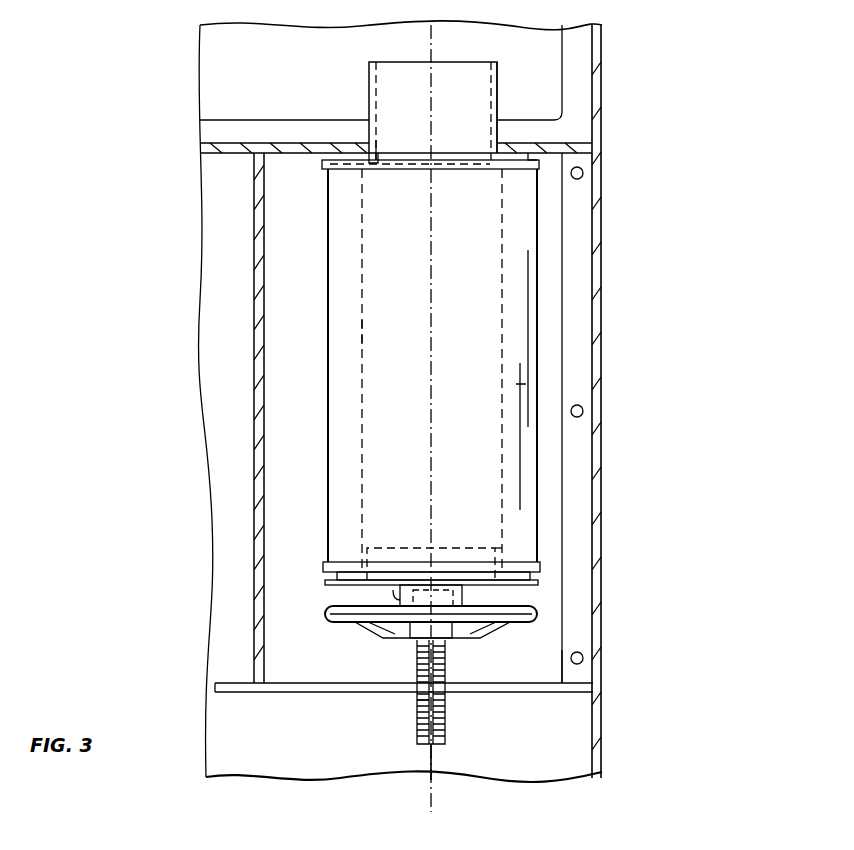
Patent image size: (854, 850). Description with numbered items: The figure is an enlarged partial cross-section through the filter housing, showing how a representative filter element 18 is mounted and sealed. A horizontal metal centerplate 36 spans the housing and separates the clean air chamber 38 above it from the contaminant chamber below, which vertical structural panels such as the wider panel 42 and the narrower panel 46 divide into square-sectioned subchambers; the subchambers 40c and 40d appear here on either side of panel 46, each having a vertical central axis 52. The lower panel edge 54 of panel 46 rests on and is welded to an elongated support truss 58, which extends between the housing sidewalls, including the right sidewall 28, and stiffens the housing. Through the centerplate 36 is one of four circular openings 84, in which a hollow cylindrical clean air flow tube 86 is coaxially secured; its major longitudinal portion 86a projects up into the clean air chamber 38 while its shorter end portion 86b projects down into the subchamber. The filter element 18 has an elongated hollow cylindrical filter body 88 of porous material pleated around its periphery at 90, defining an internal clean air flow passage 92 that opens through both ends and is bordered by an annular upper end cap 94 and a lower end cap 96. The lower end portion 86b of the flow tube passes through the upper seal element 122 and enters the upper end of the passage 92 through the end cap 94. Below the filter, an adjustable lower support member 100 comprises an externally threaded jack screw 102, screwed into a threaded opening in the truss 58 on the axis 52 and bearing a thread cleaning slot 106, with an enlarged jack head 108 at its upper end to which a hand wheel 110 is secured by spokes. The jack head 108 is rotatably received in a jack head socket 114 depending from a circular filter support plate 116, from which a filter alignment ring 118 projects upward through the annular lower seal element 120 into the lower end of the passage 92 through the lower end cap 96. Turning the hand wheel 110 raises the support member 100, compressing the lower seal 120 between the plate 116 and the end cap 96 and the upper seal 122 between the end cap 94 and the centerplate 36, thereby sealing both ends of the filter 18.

The filter element 18 is at (538, 445).
The right sidewall 28 is at (592, 292).
The centerplate 36 is at (246, 150).
The clean air chamber 38 is at (548, 54).
The contaminant subchamber 40c is at (229, 523).
The contaminant subchamber 40d is at (531, 653).
The structural panel 42 is at (237, 420).
The structural panel 46 is at (254, 290).
The vertical central axis 52 is at (436, 770).
The lower panel edge 54 is at (270, 690).
The support truss 58 is at (538, 693).
The circular opening 84 is at (378, 152).
The clean air flow tube 86 is at (368, 88).
The major longitudinal portion of flow tube 86a is at (497, 95).
The end portion of flow tube 86b is at (376, 160).
The filter body 88 is at (537, 394).
The pleats 90 is at (520, 382).
The internal clean air flow passage 92 is at (365, 331).
The upper end cap 94 is at (322, 164).
The lower end cap 96 is at (323, 566).
The lower support member 100 is at (388, 643).
The jack screw element 102 is at (448, 730).
The thread cleaning slot 106 is at (428, 722).
The jack head portion 108 is at (437, 548).
The hand wheel member 110 is at (322, 614).
The jack head socket 114 is at (394, 598).
The filter support plate 116 is at (530, 585).
The filter alignment ring 118 is at (500, 548).
The lower seal element 120 is at (530, 576).
The upper seal element 122 is at (532, 152).